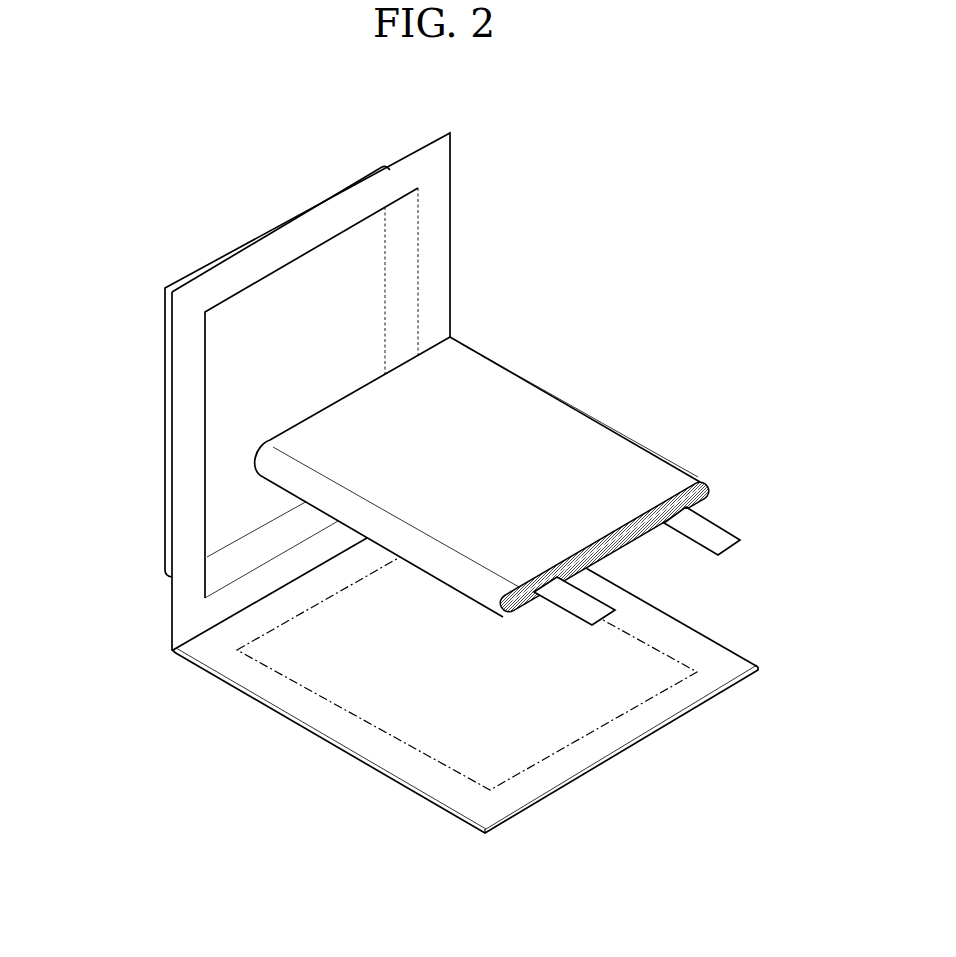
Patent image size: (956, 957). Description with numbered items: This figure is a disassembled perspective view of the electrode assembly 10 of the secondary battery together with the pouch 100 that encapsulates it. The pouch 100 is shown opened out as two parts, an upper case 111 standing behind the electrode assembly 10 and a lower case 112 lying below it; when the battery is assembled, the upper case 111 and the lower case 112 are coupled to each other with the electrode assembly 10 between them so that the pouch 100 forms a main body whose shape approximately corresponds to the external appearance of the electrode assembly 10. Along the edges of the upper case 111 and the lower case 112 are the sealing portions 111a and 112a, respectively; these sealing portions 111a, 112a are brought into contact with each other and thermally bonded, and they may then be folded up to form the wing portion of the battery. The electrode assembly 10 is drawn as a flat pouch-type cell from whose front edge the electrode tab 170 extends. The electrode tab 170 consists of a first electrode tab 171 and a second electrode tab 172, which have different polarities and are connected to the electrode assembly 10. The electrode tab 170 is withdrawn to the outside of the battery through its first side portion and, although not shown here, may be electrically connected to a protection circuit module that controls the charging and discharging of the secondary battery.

The pouch 100 is at (404, 483).
The upper case 111 is at (318, 392).
The sealing portion 111a is at (442, 241).
The lower case 112 is at (466, 661).
The sealing portion 112a is at (342, 730).
The electrode assembly 10 is at (553, 415).
The electrode tab 170 is at (677, 582).
The first electrode tab 171 is at (617, 617).
The second electrode tab 172 is at (727, 553).